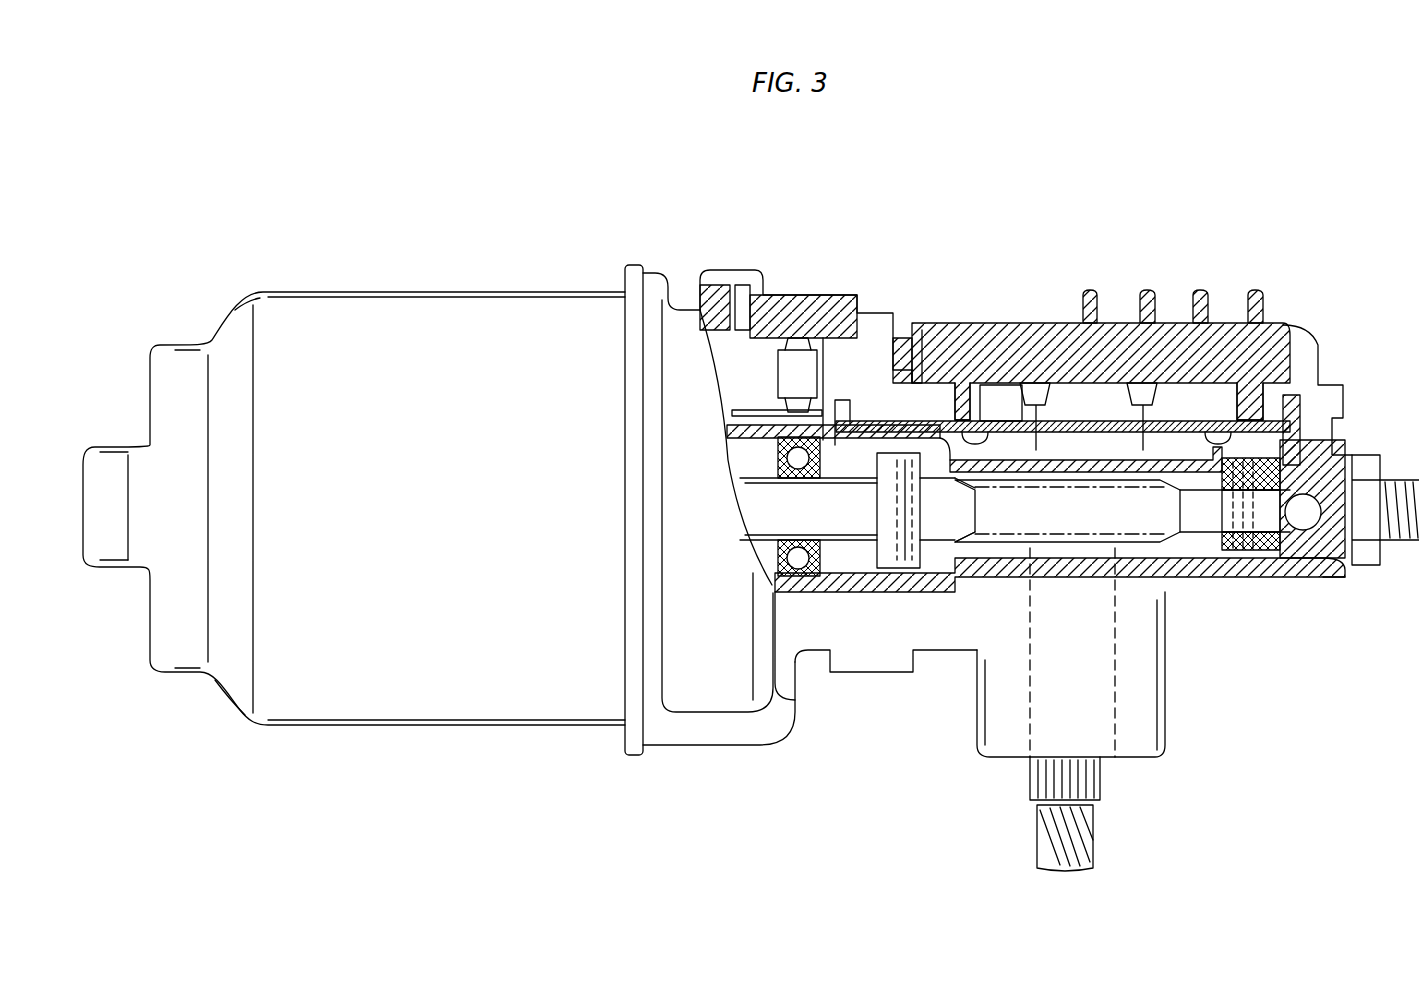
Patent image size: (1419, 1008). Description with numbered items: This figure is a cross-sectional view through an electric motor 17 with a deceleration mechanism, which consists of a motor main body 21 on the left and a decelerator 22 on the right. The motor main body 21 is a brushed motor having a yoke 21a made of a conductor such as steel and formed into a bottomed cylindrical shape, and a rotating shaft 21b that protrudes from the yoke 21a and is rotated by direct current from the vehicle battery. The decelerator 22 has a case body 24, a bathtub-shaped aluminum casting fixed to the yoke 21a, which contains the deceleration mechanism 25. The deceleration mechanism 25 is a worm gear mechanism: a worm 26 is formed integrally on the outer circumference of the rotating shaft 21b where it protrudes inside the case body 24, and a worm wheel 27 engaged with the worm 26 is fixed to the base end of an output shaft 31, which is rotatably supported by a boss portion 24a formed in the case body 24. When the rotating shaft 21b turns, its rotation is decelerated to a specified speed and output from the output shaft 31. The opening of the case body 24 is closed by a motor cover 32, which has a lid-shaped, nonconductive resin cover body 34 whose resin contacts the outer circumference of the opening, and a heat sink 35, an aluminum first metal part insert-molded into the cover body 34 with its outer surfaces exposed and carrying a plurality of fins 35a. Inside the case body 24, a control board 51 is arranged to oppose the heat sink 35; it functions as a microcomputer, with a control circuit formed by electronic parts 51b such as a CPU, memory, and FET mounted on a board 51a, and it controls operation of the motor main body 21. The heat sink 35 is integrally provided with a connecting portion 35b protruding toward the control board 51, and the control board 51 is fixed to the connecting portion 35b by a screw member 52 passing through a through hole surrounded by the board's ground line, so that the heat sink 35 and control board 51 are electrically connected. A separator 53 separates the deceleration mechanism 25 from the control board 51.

The electric motor with a deceleration mechanism 17 is at (1312, 205).
The motor main body 21 is at (357, 274).
The yoke 21a is at (445, 310).
The rotating shaft 21b is at (757, 512).
The decelerator 22 is at (977, 292).
The case body 24 is at (1283, 583).
The boss portion 24a is at (1150, 712).
The deceleration mechanism 25 is at (1178, 548).
The worm 26 is at (990, 545).
The worm wheel 27 is at (897, 548).
The output shaft 31 is at (1040, 838).
The motor cover 32 is at (868, 297).
The cover body 34 is at (780, 290).
The heat sink 35 is at (1056, 320).
The fins 35a is at (1203, 292).
The connecting portion 35b is at (958, 408).
The control board 51 is at (887, 419).
The board 51a is at (1007, 403).
The electronic parts 51b is at (1135, 398).
The screw member 52 is at (972, 440).
The separator 53 is at (1292, 447).